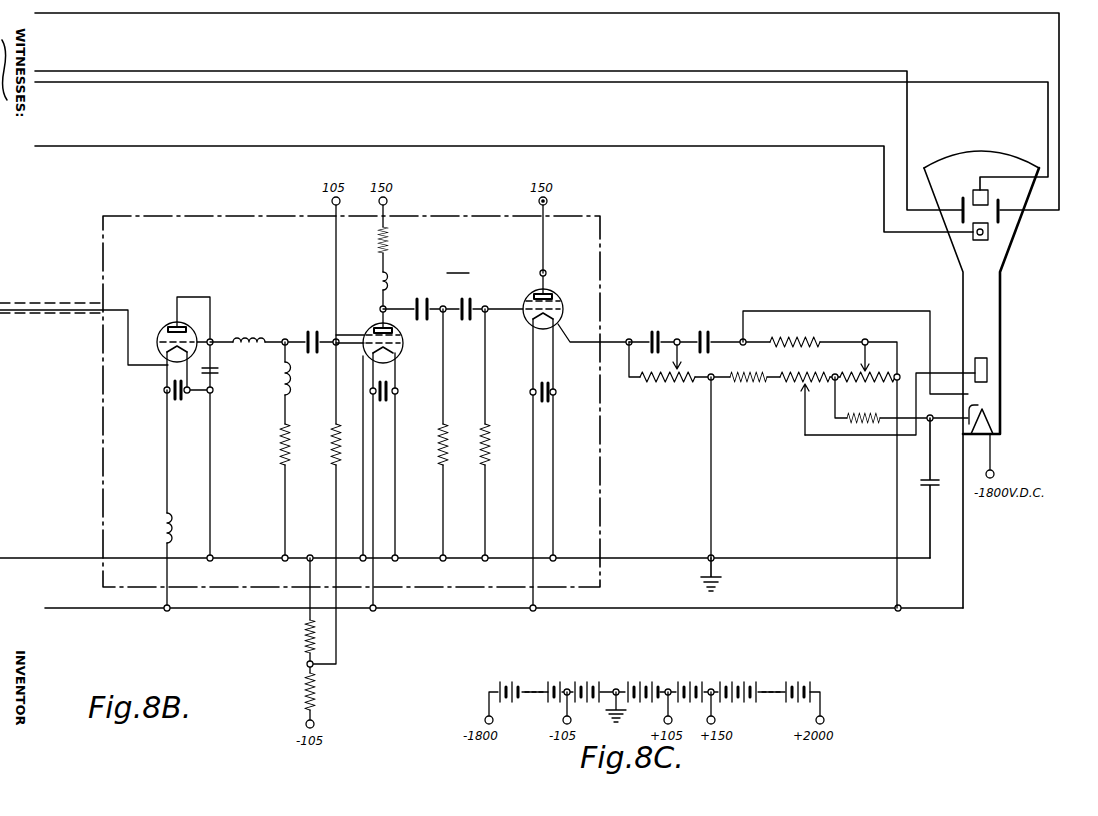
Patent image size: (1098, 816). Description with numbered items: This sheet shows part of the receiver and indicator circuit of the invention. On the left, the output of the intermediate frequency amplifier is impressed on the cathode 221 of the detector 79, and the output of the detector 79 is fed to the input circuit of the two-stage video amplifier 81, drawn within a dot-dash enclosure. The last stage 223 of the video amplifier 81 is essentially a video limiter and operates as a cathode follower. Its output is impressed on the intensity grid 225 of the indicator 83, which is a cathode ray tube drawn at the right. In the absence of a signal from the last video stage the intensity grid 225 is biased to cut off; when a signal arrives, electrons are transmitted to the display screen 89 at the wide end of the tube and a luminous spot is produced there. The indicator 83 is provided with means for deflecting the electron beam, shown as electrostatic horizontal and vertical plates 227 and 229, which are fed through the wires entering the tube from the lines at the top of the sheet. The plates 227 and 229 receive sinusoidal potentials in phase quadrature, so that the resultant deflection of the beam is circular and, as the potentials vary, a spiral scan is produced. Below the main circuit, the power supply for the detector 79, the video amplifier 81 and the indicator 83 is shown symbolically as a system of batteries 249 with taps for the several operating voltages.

In FIG. 8B, the detector 79 is at (195, 320).
In FIG. 8B, the video amplifier 81 is at (351, 401).
In FIG. 8B, the indicator 83 is at (982, 370).
In FIG. 8B, the display screen 89 is at (990, 144).
In FIG. 8B, the cathode 221 is at (170, 352).
In FIG. 8B, the last stage 223 is at (543, 273).
In FIG. 8B, the intensity grid 225 is at (976, 392).
In FIG. 8B, the horizontal plates 227 is at (962, 204).
In FIG. 8B, the vertical plates 229 is at (999, 199).
In FIG. 8C, the batteries 249 is at (742, 681).